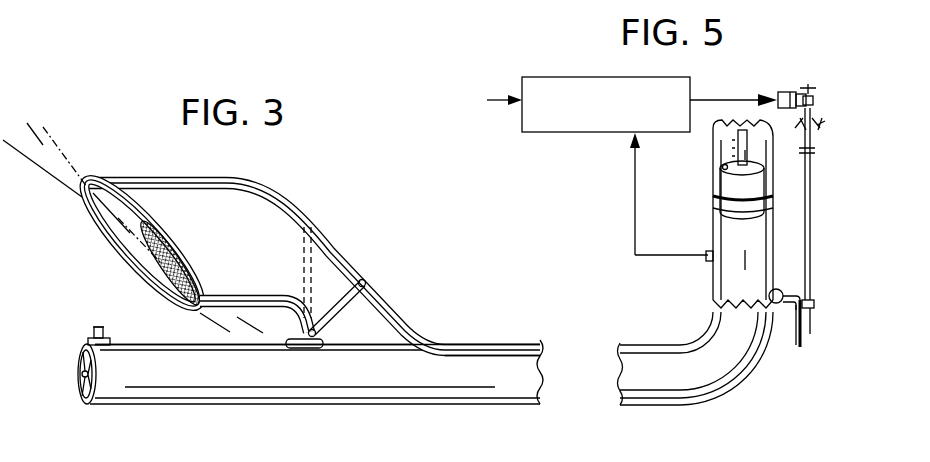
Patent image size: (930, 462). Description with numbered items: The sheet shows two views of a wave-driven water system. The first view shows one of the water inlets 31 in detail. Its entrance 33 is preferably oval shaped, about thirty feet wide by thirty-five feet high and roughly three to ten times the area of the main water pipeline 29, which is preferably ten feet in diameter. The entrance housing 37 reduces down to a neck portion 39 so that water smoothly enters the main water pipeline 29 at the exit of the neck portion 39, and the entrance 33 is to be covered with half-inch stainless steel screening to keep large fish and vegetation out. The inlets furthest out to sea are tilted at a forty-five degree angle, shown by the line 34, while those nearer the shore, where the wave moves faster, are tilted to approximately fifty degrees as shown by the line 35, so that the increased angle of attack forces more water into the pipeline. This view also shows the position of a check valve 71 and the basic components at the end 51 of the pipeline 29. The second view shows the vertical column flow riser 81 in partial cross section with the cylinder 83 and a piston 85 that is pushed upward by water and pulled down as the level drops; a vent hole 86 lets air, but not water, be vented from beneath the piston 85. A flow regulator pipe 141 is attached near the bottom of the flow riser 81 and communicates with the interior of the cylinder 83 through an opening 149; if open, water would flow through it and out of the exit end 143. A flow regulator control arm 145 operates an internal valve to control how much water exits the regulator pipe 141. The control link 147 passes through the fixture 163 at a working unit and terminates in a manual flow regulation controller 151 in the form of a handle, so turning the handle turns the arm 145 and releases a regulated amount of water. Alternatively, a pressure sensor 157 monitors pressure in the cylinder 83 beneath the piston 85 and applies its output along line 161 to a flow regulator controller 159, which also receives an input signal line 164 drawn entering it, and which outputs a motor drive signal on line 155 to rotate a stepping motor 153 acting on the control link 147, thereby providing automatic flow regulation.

In FIG. 3, the main water pipeline 29 is at (456, 366).
In FIG. 3, the water inlet 31 is at (214, 175).
In FIG. 3, the entrance 33 is at (122, 244).
In FIG. 3, the line 34 is at (66, 160).
In FIG. 3, the line 35 is at (48, 140).
In FIG. 3, the entrance housing 37 is at (158, 197).
In FIG. 3, the neck portion 39 is at (365, 300).
In FIG. 3, the end of pipeline 51 is at (65, 356).
In FIG. 3, the check valve 71 is at (324, 283).
In FIG. 5, the flow riser 81 is at (690, 192).
In FIG. 5, the cylinder 83 is at (772, 212).
In FIG. 5, the piston 85 is at (714, 208).
In FIG. 5, the vent hole 86 is at (722, 166).
In FIG. 5, the flow regulator pipe 141 is at (787, 330).
In FIG. 5, the exit end 143 is at (804, 345).
In FIG. 5, the flow regulator control arm 145 is at (810, 320).
In FIG. 5, the control link 147 is at (810, 232).
In FIG. 5, the opening 149 is at (772, 287).
In FIG. 5, the manual flow regulation controller 151 is at (808, 88).
In FIG. 5, the stepping motor 153 is at (780, 93).
In FIG. 5, the line 155 is at (700, 101).
In FIG. 5, the pressure sensor 157 is at (708, 262).
In FIG. 5, the flow regulator controller 159 is at (597, 133).
In FIG. 5, the line 161 is at (650, 257).
In FIG. 5, the fixture 163 is at (811, 152).
In FIG. 5, the input signal 164 is at (492, 101).